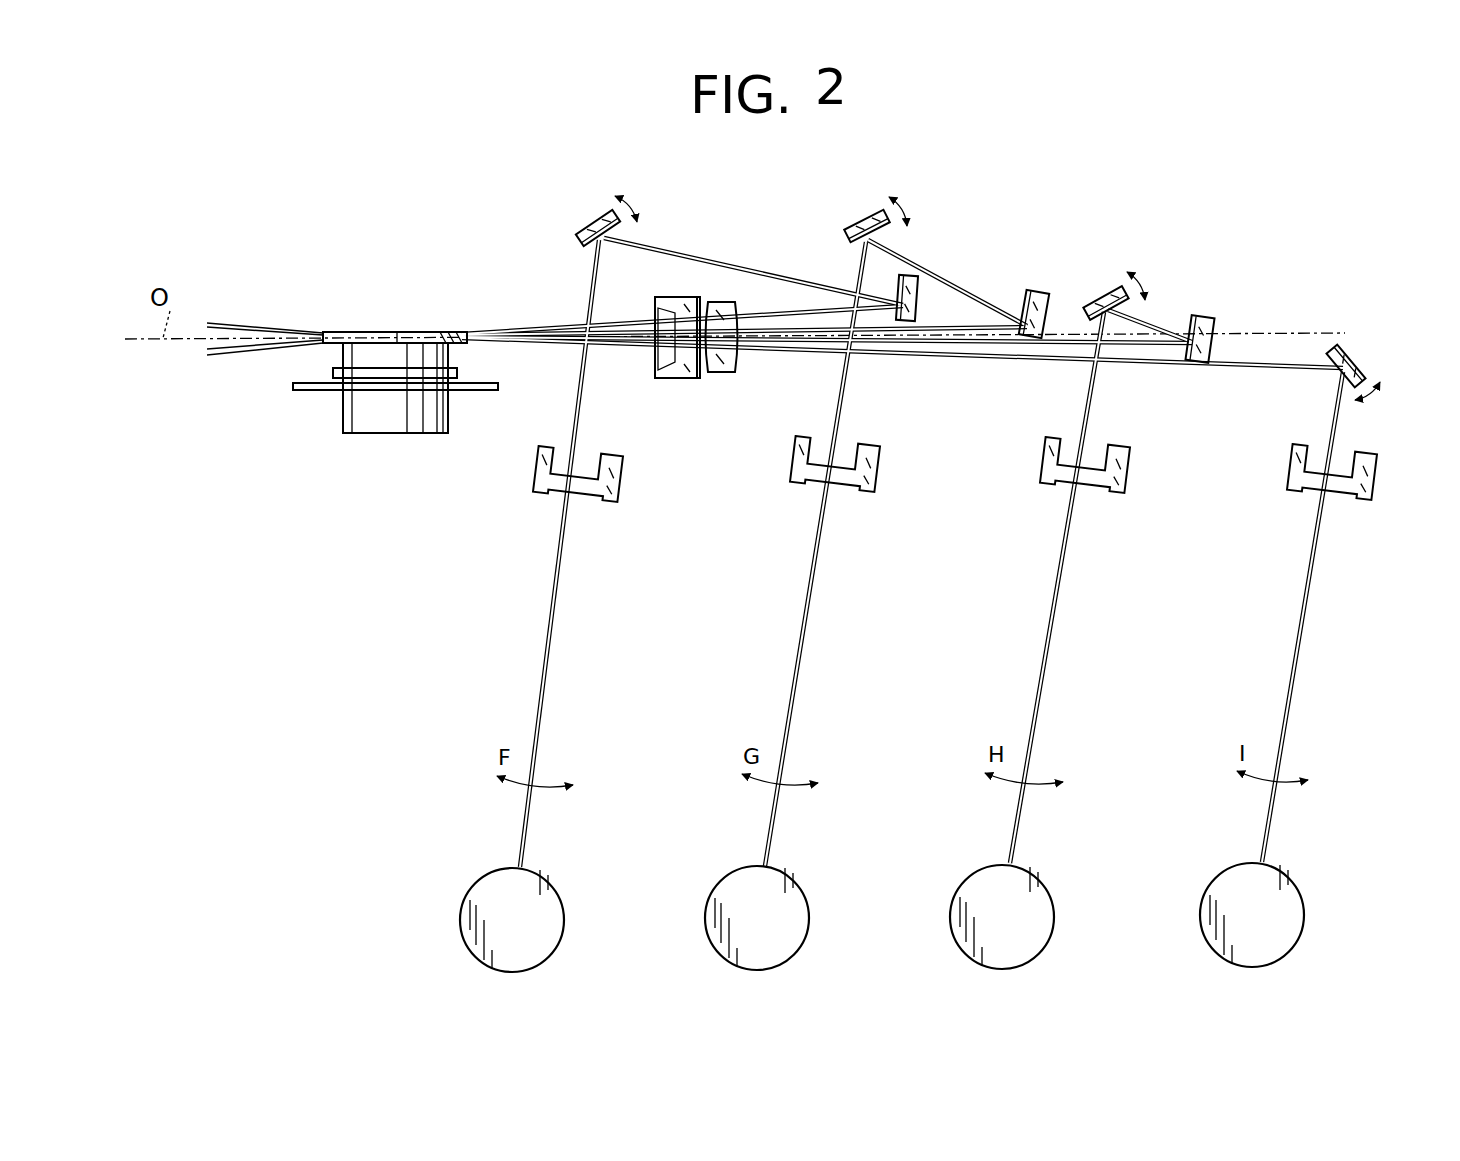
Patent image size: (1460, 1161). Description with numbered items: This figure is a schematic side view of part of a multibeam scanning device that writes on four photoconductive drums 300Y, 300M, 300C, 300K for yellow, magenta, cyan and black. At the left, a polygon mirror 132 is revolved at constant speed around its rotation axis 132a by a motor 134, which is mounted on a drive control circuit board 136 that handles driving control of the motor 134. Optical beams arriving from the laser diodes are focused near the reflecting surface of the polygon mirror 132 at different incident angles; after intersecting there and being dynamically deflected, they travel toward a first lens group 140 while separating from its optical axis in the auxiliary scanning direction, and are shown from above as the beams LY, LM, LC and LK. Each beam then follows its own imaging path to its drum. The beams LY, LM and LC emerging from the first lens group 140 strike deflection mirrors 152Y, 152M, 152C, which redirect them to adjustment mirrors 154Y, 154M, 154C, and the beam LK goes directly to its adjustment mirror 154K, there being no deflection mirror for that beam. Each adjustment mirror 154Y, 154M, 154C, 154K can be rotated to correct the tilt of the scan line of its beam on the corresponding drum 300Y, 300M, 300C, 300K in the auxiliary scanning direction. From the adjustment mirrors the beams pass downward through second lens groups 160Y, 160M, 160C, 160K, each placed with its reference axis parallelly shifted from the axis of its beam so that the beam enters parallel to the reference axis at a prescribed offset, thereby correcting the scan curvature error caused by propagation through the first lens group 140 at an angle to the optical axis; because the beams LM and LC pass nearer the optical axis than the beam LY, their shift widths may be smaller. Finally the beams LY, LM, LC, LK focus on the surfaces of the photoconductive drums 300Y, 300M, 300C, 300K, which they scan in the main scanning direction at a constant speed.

The polygon mirror 132 is at (456, 300).
The rotation axis 132a is at (445, 358).
The motor 134 is at (418, 422).
The drive control circuit board 136 is at (320, 391).
The first lens group 140 is at (697, 385).
The optical beam LY is at (770, 322).
The optical beam LM is at (778, 337).
The optical beam LC is at (795, 343).
The optical beam LK is at (806, 355).
The deflection mirror 152Y is at (917, 290).
The deflection mirror 152M is at (1028, 296).
The deflection mirror 152C is at (1210, 340).
The adjustment mirror 154Y is at (586, 232).
The adjustment mirror 154M is at (858, 224).
The adjustment mirror 154C is at (1108, 297).
The adjustment mirror 154K is at (1350, 362).
The second lens group 160Y is at (612, 496).
The second lens group 160M is at (870, 490).
The second lens group 160C is at (1116, 490).
The second lens group 160K is at (1366, 492).
The photoconductive drum 300Y is at (484, 873).
The photoconductive drum 300M is at (729, 872).
The photoconductive drum 300C is at (974, 870).
The photoconductive drum 300K is at (1224, 868).